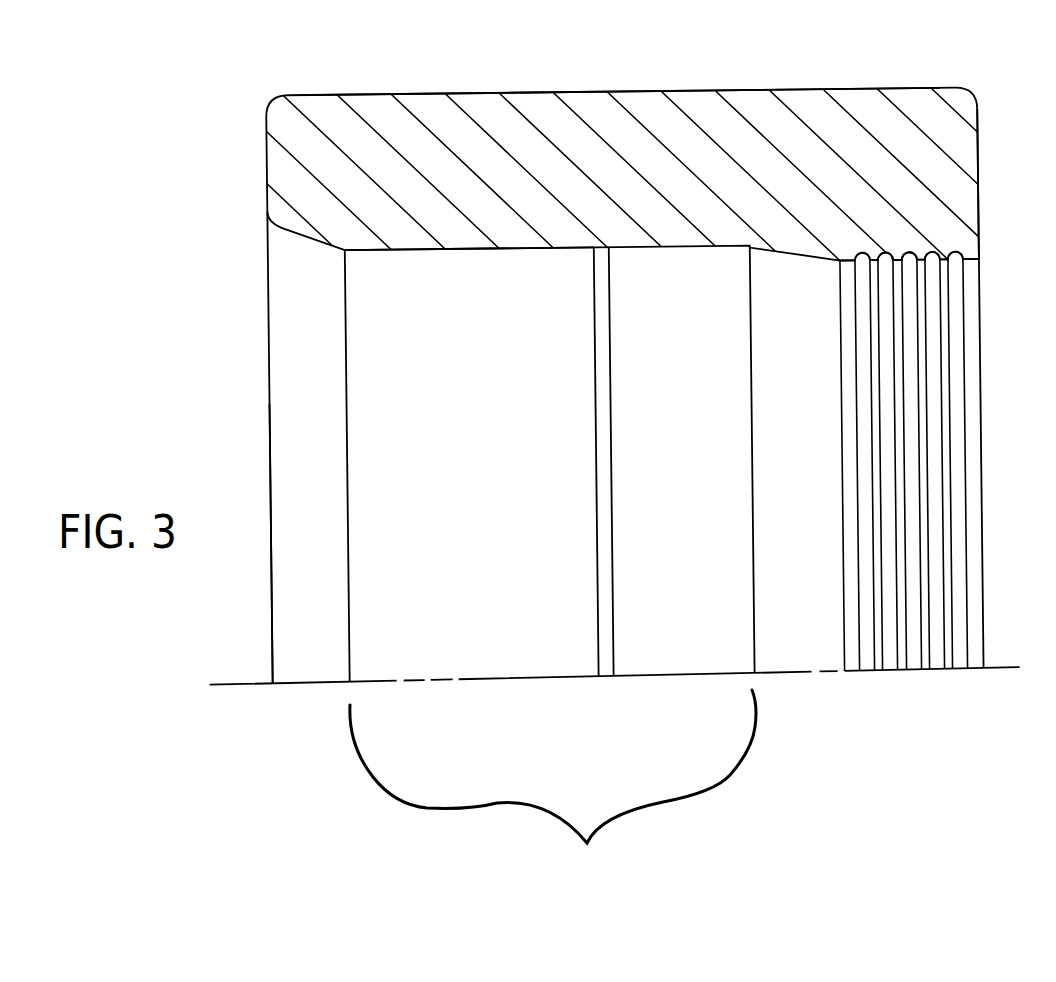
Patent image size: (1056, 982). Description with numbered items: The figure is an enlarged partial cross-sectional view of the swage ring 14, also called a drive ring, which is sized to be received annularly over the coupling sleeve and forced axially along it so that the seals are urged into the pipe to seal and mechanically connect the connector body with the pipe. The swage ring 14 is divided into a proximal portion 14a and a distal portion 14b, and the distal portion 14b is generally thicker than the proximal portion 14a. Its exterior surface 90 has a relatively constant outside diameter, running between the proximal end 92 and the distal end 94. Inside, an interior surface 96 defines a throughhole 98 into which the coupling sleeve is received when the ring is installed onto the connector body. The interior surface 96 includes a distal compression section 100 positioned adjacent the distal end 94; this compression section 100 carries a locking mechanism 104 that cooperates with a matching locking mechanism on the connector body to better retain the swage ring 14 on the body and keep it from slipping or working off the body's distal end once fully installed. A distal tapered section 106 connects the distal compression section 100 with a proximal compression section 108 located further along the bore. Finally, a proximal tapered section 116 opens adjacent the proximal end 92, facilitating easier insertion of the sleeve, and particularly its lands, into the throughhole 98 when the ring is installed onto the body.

The swage ring 14 is at (641, 60).
The proximal portion 14a is at (442, 170).
The distal portion 14b is at (853, 162).
The exterior surface 90 is at (542, 92).
The proximal end 92 is at (267, 168).
The distal end 94 is at (979, 157).
The interior surface 96 is at (457, 254).
The throughhole 98 is at (332, 388).
The distal compression section 100 is at (900, 638).
The locking mechanism 104 is at (860, 254).
The distal tapered section 106 is at (800, 643).
The proximal compression section 108 is at (553, 791).
The proximal tapered section 116 is at (317, 657).